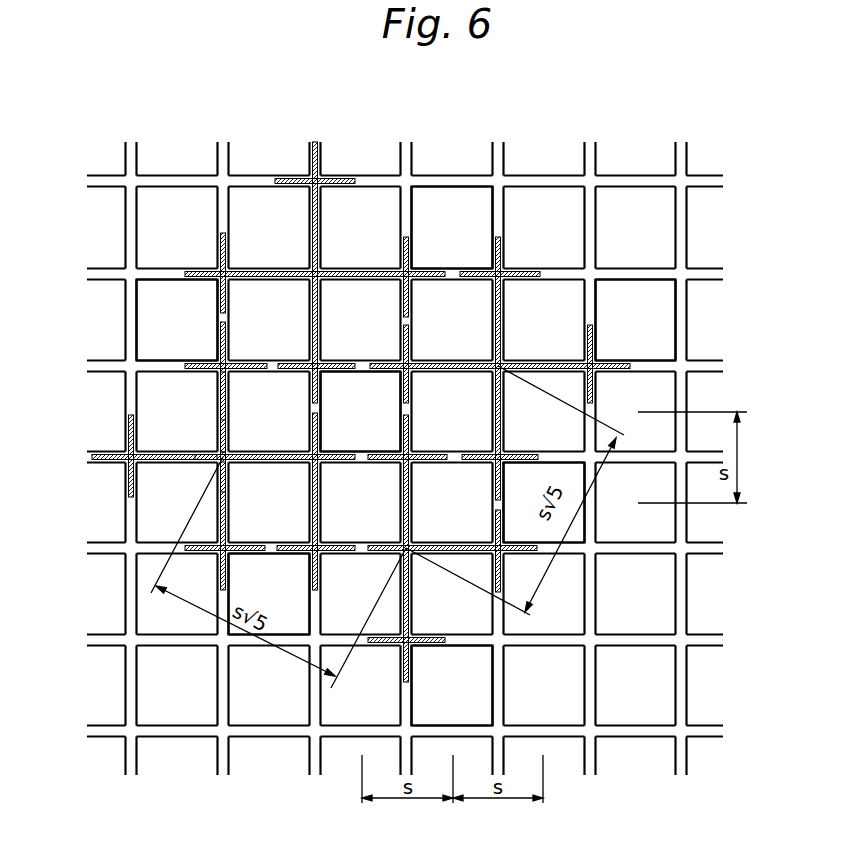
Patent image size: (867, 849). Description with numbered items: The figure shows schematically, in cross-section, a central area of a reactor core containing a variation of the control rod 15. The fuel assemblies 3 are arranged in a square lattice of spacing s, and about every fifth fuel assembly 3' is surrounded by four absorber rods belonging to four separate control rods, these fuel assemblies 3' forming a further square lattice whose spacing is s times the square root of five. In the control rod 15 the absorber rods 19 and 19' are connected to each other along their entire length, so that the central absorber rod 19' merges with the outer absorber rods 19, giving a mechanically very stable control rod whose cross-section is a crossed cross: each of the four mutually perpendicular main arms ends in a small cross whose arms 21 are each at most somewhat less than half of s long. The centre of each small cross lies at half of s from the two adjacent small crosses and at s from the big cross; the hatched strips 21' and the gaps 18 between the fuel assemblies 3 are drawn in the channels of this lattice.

The fuel assembly 3 is at (420, 423).
The fuel assembly 3' is at (409, 498).
The gap / joint channel 18 is at (131, 145).
The arm 21 is at (360, 412).
The hatched strip at junction 21' is at (225, 458).
The absorber rod 19 is at (223, 457).
The central absorber rod 19' is at (245, 439).
The control rod 15 is at (215, 412).